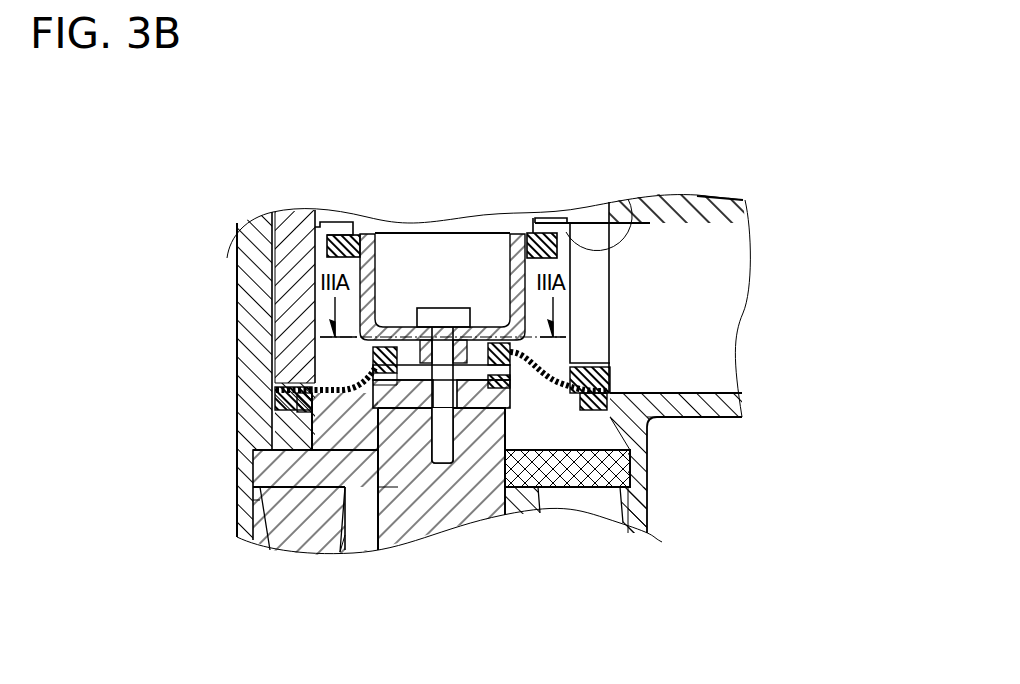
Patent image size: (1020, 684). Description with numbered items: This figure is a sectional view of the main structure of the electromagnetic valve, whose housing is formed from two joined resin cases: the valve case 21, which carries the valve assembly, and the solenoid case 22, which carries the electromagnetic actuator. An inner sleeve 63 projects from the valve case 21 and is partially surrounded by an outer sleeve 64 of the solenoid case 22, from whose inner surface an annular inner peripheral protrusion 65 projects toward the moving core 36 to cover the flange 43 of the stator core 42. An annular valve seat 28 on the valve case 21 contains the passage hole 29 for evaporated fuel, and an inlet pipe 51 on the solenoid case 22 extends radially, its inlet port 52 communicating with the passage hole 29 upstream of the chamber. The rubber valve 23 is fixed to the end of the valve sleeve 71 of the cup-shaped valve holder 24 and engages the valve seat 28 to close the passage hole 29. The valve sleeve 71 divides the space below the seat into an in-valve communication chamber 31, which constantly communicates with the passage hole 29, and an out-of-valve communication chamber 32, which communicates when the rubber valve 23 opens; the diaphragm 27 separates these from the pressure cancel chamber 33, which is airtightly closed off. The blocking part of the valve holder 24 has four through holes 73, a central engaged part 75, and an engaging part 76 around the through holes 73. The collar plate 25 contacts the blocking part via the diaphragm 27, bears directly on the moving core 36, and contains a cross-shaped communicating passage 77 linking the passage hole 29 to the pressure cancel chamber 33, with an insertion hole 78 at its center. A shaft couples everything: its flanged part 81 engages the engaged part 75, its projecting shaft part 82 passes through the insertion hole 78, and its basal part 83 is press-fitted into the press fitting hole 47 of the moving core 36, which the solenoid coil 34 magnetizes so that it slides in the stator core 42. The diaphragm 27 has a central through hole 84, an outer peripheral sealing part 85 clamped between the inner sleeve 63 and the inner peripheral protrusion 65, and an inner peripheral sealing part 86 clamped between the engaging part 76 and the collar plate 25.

The valve case 21 is at (300, 216).
The inner sleeve 63 is at (255, 229).
The solenoid case 22 is at (248, 234).
The outer sleeve 64 is at (207, 370).
The rubber valve 23 is at (331, 222).
The valve holder 24 is at (368, 233).
The valve sleeve 71 is at (421, 207).
The collar plate 25 is at (335, 430).
The diaphragm 27 is at (628, 470).
The valve seat 28 is at (630, 214).
The passage hole 29 is at (536, 220).
The in-valve communication chamber 31 is at (430, 250).
The out-of-valve communication chamber 32 is at (332, 352).
The pressure cancel chamber 33 is at (318, 420).
The solenoid coil 34 is at (303, 540).
The moving core 36 is at (415, 505).
The stator core 42 is at (350, 522).
The flange 43 is at (262, 517).
The press fitting hole 47 is at (450, 470).
The inlet pipe 51 is at (707, 408).
The inlet port 52 is at (708, 307).
The inner peripheral protrusion 65 is at (310, 438).
The through holes 73 is at (379, 235).
The engaged part 75 is at (446, 308).
The engaging part 76 is at (703, 420).
The communicating passage 77 is at (258, 500).
The insertion hole 78 is at (316, 542).
The flanged part 81 is at (460, 318).
The projecting shaft part 82 is at (510, 492).
The basal part 83 is at (432, 528).
The through hole 84 is at (548, 503).
The outer peripheral sealing part 85 is at (292, 392).
The inner peripheral sealing part 86 is at (592, 506).